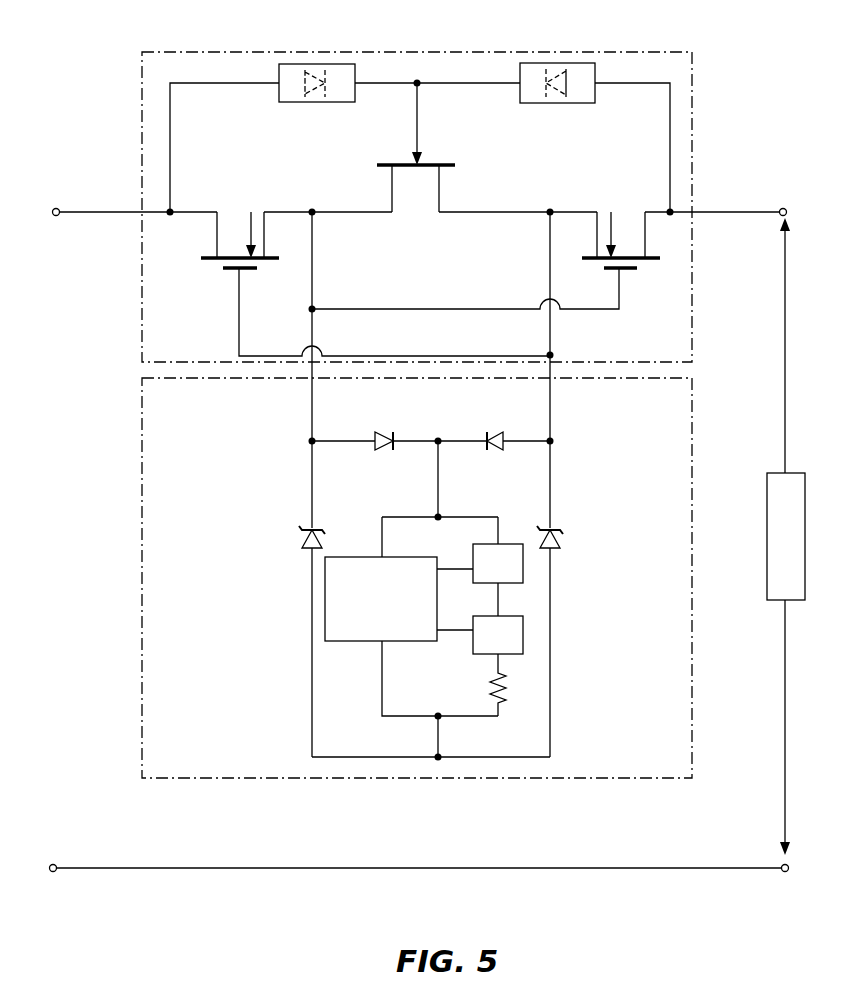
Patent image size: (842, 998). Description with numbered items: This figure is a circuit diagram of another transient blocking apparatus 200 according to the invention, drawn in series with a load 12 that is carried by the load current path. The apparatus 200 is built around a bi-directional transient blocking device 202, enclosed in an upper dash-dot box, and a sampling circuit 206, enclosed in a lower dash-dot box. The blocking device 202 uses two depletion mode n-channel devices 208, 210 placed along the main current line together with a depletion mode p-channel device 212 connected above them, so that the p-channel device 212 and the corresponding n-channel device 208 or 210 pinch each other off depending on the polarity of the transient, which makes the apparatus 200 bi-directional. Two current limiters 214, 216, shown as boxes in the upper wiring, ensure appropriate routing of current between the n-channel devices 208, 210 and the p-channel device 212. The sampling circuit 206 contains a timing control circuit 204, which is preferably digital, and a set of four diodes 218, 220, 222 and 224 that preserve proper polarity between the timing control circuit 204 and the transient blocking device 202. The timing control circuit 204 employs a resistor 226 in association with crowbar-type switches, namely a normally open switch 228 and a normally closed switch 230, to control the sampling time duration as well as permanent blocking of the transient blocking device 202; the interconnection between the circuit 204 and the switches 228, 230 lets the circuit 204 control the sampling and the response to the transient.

The transient blocking apparatus 200 is at (98, 45).
The transient blocking device 202 is at (142, 108).
The timing control circuit 204 is at (357, 641).
The sampling circuit 206 is at (142, 468).
The depletion mode n-channel device 208 is at (250, 209).
The depletion mode n-channel device 210 is at (636, 197).
The depletion mode p-channel device 212 is at (454, 164).
The current limiter 214 is at (296, 104).
The current limiter 216 is at (538, 104).
The diode 218 is at (300, 530).
The diode 220 is at (378, 433).
The diode 222 is at (486, 433).
The diode 224 is at (564, 530).
The resistor 226 is at (500, 700).
The normally open switch 228 is at (522, 543).
The normally closed switch 230 is at (473, 646).
The load 12 is at (805, 602).